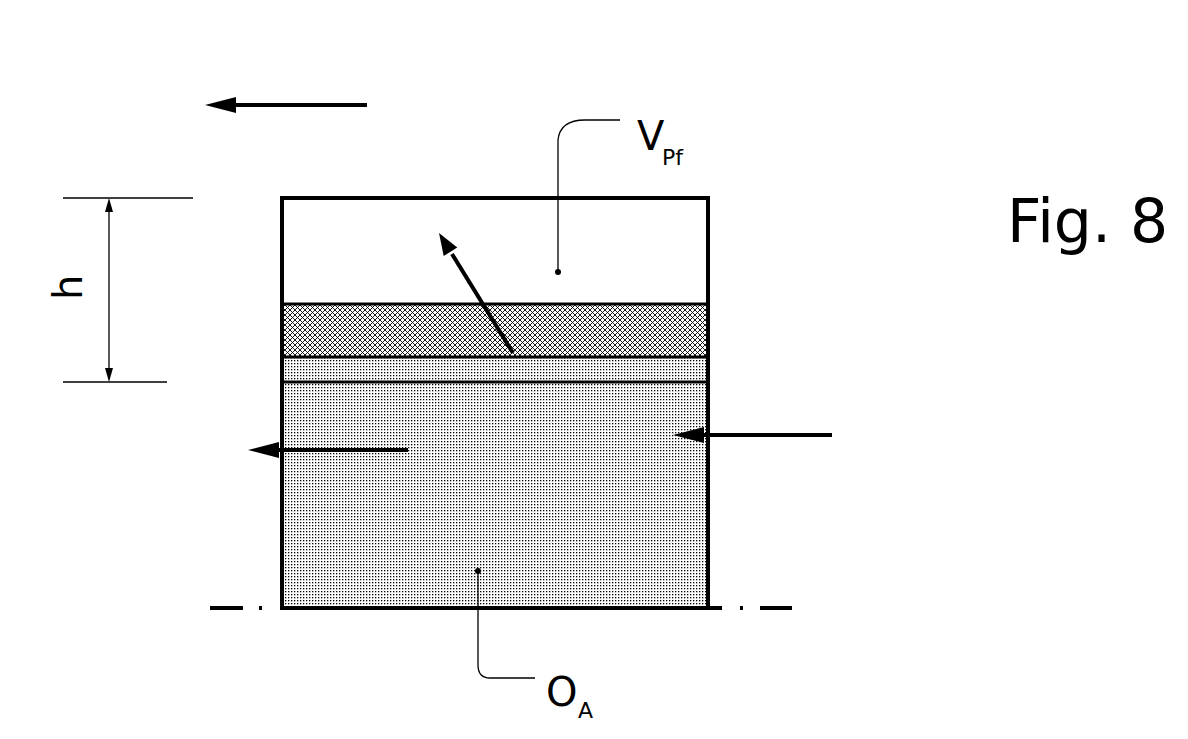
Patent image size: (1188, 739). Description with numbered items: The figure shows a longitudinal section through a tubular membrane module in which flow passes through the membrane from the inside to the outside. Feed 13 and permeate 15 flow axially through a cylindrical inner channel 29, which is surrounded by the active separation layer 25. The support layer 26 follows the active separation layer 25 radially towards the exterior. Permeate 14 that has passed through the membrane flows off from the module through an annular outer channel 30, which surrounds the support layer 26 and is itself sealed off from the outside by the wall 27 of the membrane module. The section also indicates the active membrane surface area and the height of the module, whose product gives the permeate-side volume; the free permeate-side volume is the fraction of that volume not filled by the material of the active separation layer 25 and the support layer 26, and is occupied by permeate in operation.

The feed 13 is at (775, 430).
The permeate 14 is at (265, 100).
The permeate 15 is at (330, 452).
The active separation layer 25 is at (653, 367).
The support layer 26 is at (693, 333).
The wall 27 is at (708, 198).
The cylindrical inner channel 29 is at (554, 496).
The annular outer channel 30 is at (388, 281).